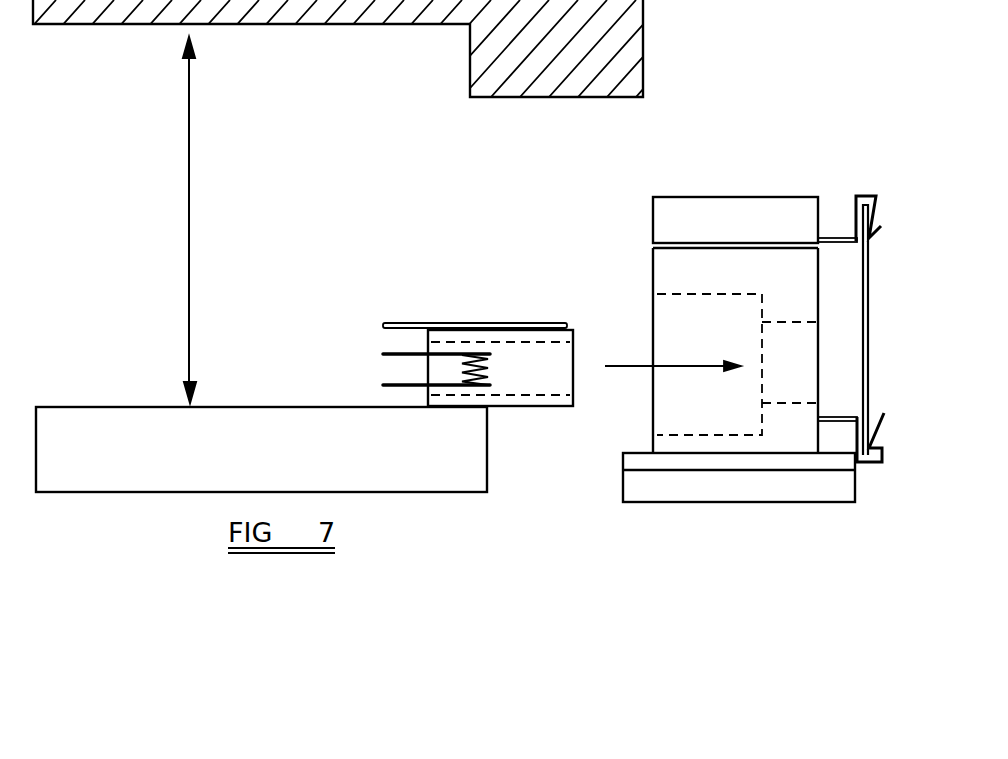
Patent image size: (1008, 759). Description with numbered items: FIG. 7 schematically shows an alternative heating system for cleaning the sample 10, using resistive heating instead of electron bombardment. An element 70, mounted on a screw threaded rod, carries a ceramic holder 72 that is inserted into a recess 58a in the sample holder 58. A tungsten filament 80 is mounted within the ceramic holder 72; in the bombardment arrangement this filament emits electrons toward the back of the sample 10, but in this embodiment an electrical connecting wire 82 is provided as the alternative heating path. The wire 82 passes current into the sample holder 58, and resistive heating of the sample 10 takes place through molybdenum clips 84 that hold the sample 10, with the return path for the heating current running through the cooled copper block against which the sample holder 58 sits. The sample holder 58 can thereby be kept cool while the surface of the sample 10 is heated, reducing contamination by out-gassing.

The sample 10 is at (870, 323).
The sample holder 58 is at (662, 268).
The recess 58a is at (685, 435).
The element 70 is at (470, 460).
The ceramic holder 72 is at (573, 330).
The tungsten filament 80 is at (397, 383).
The electrical connecting wire 82 is at (487, 323).
The molybdenum clips 84 is at (877, 240).